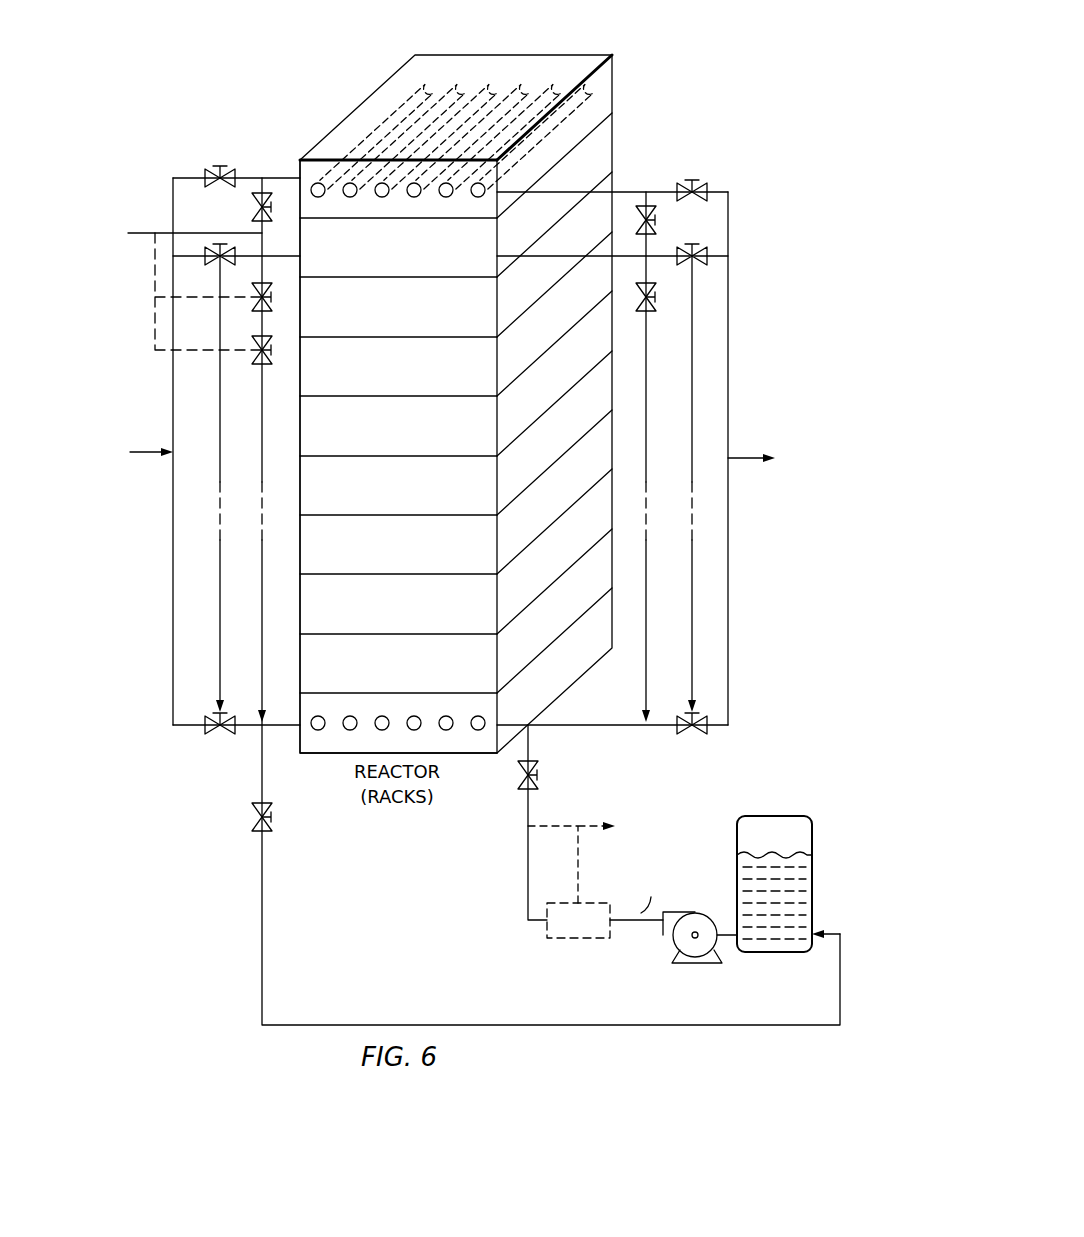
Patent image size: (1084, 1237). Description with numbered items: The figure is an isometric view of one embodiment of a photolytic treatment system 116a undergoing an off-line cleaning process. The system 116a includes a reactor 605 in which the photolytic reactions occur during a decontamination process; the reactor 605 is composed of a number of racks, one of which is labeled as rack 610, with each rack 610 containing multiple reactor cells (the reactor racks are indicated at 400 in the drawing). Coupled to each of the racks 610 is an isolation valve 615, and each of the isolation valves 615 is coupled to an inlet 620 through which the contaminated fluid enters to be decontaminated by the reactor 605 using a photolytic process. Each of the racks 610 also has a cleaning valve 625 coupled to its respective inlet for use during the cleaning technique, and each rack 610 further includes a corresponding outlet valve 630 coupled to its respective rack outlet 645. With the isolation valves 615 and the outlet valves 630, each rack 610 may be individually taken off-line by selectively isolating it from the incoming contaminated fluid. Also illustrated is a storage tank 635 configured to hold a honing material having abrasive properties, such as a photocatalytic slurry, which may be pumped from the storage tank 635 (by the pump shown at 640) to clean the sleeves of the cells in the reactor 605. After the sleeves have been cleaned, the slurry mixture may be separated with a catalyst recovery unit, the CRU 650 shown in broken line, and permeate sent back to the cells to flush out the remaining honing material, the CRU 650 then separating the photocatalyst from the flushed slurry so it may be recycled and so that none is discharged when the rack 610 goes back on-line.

The photolytic treatment system 116a is at (166, 114).
The rack 400 is at (378, 103).
The reactor 605 is at (576, 62).
The rack 610 is at (292, 162).
The isolation valve 615 is at (205, 172).
The inlet 620 is at (150, 450).
The cleaning valve 625 is at (266, 224).
The outlet valve 630 is at (702, 187).
The storage tank 635 is at (775, 953).
The pump 640 is at (697, 964).
The rack outlet 645 is at (752, 455).
The catalyst recovery unit (CRU) 650 is at (572, 940).